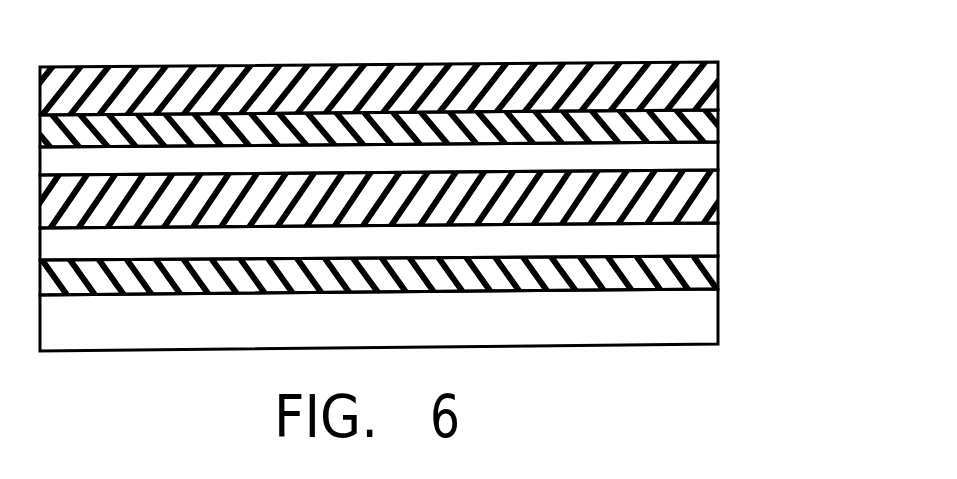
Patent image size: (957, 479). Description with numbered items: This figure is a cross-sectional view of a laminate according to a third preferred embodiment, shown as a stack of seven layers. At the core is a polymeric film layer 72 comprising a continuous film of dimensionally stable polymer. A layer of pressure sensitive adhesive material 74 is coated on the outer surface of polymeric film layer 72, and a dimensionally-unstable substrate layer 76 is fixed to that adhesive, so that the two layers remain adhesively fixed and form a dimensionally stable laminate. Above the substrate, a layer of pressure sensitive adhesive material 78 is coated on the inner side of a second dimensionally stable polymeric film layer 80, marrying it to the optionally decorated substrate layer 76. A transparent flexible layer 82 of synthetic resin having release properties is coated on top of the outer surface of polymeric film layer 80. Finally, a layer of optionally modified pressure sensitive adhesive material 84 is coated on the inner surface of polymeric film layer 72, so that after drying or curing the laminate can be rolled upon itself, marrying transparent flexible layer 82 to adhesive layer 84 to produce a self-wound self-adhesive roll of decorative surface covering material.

The transparent flexible layer 82 is at (718, 82).
The polymeric film layer 80 is at (718, 122).
The layer of pressure sensitive adhesive material 78 is at (718, 155).
The substrate layer 76 is at (718, 200).
The layer of pressure sensitive adhesive material 74 is at (718, 239).
The polymeric film layer 72 is at (718, 273).
The layer of optionally modified pressure sensitive adhesive material 84 is at (710, 323).